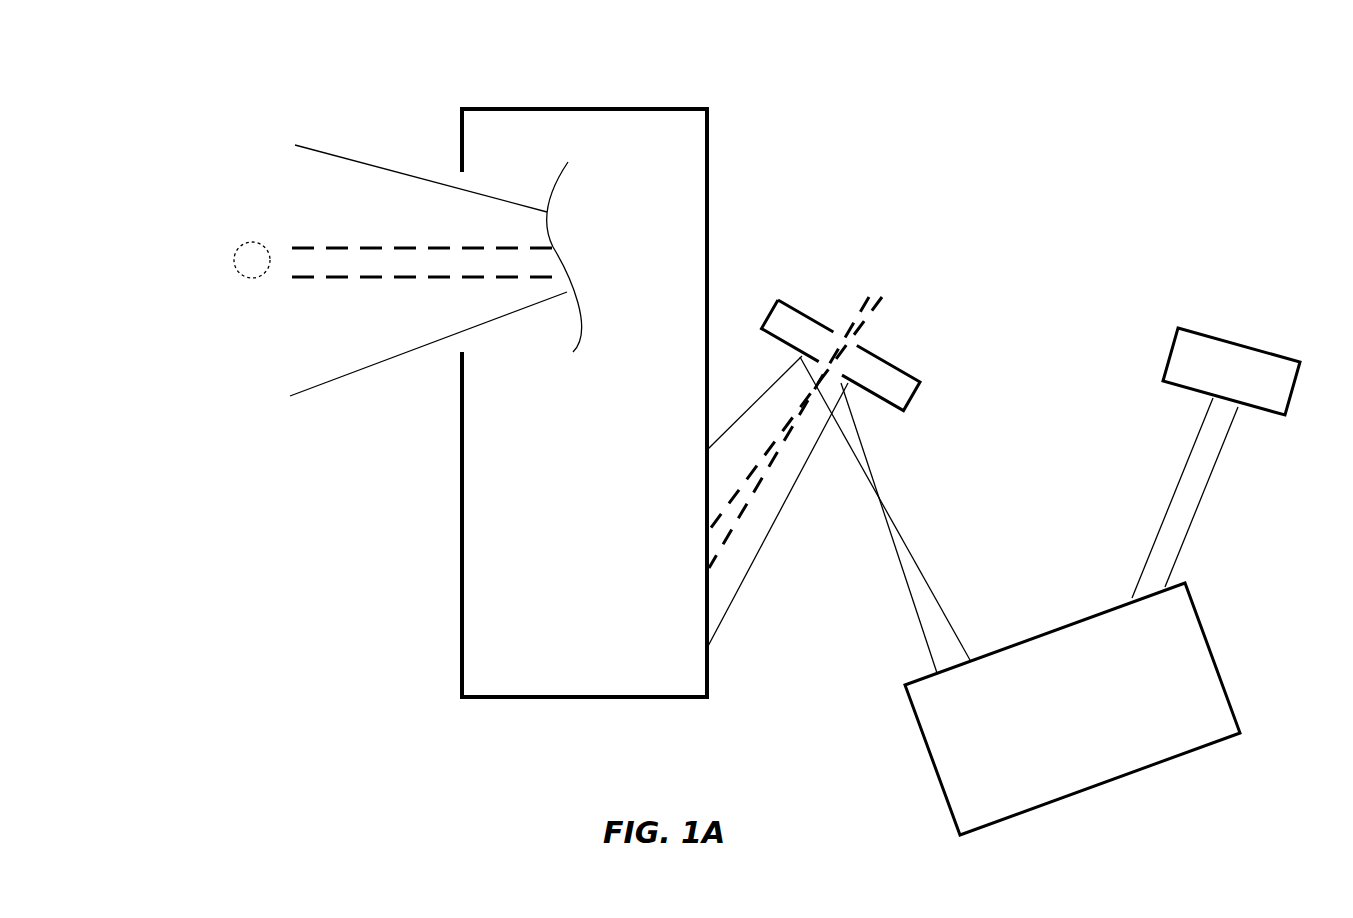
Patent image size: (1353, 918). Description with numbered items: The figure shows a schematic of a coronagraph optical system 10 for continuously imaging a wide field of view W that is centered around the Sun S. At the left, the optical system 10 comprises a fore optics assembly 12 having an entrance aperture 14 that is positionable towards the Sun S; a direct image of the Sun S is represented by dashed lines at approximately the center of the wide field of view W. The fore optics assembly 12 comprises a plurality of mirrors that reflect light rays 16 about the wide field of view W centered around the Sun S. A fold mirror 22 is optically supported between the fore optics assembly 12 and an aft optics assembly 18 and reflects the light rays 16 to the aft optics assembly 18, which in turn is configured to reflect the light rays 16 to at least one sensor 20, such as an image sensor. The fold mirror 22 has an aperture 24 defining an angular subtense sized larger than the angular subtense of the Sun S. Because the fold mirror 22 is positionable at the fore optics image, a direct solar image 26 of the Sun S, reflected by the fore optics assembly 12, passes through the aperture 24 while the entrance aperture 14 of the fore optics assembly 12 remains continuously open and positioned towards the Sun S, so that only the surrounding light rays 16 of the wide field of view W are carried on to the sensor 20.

The coronagraph optical system 10 is at (448, 55).
The fore optics assembly 12 is at (458, 557).
The entrance aperture 14 is at (455, 348).
The light rays 16 is at (340, 157).
The aft optics assembly 18 is at (940, 785).
The sensor 20 is at (1175, 348).
The fold mirror 22 is at (778, 300).
The aperture 24 is at (838, 326).
The direct solar image 26 is at (758, 502).
The Sun S is at (233, 262).
The wide field of view W is at (288, 167).